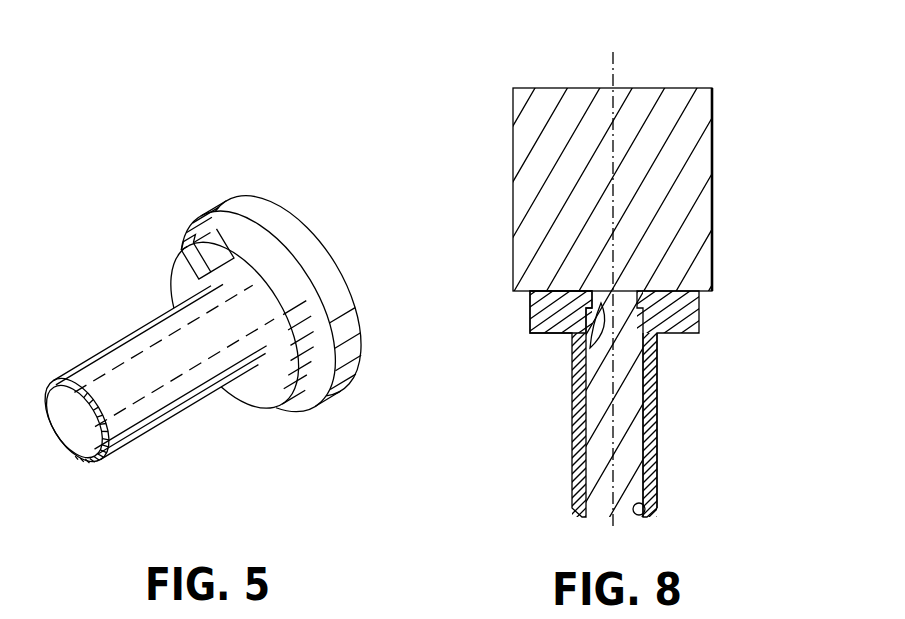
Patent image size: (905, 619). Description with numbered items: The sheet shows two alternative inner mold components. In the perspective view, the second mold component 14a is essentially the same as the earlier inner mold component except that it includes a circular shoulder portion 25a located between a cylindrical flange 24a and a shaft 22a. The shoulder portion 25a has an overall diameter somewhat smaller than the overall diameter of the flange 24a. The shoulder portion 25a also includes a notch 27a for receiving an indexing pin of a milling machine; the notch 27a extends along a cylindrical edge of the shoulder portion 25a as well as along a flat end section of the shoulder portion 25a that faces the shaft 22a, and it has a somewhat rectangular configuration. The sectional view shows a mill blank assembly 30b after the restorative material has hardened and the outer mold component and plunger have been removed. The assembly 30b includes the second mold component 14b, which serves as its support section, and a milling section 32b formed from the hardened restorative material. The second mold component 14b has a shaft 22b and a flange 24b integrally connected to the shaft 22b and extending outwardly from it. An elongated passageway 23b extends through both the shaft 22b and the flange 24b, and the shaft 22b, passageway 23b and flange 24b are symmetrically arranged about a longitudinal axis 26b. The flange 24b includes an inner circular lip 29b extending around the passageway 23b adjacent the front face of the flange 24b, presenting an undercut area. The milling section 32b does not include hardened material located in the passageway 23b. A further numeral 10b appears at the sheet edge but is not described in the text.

In FIG. 5, the second mold component 14a is at (118, 328).
In FIG. 5, the shaft 22a is at (147, 430).
In FIG. 5, the cylindrical flange 24a is at (352, 372).
In FIG. 5, the circular shoulder portion 25a is at (262, 397).
In FIG. 5, the notch 27a is at (212, 230).
In FIG. 8, the mill blank assembly 30b is at (731, 65).
In FIG. 8, the milling section 32b is at (700, 170).
In FIG. 8, the longitudinal axis 26b is at (613, 68).
In FIG. 8, the flange 24b is at (533, 308).
In FIG. 8, the inner circular lip 29b is at (573, 352).
In FIG. 8, the second mold component 14b is at (664, 376).
In FIG. 8, the shaft 22b is at (657, 452).
In FIG. 8, the passageway 23b is at (640, 516).
In FIG. 8, the assembly 10b is at (795, 609).